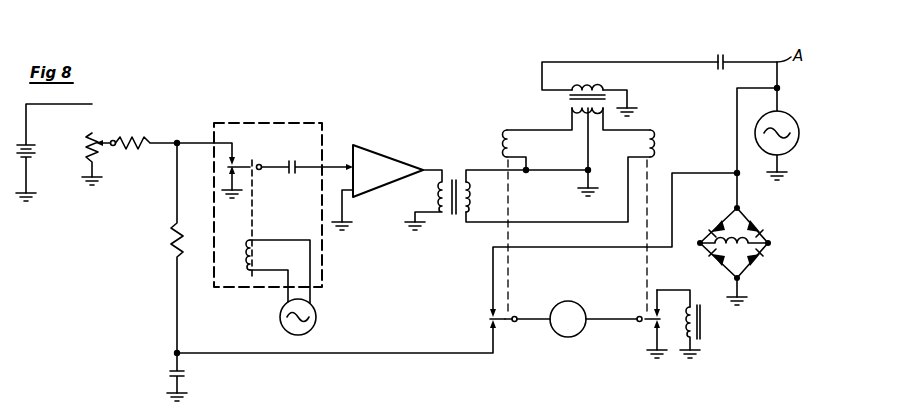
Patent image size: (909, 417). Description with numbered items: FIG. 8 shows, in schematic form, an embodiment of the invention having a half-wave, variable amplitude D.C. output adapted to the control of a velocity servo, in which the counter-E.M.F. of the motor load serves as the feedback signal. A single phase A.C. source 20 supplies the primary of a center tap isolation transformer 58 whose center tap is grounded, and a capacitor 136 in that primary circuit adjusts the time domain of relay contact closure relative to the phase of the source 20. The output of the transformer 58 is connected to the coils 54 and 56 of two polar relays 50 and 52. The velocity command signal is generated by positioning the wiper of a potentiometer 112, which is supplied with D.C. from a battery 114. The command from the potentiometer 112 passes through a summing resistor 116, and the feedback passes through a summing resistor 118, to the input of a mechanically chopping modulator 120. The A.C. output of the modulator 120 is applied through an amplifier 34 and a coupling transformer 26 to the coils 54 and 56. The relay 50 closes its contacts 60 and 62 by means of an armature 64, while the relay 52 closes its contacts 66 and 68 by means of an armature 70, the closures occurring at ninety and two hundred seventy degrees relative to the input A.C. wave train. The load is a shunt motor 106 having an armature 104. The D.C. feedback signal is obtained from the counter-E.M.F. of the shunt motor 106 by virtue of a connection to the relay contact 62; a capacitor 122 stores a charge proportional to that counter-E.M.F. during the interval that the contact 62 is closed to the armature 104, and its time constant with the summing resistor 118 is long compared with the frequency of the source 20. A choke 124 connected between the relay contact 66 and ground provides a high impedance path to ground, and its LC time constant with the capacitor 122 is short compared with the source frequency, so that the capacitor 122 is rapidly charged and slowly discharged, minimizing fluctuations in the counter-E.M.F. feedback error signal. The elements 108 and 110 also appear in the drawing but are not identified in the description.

The single phase A.C. source 20 is at (315, 325).
The coupling transformer 26 is at (455, 178).
The amplifier 34 is at (385, 160).
The polar relay 50 is at (522, 128).
The polar relay 52 is at (627, 128).
The coil 54 is at (509, 127).
The coil 56 is at (645, 144).
The center tap isolation transformer 58 is at (582, 86).
The relay contact 60 is at (496, 316).
The relay contact 62 is at (488, 331).
The armature 64 is at (507, 323).
The relay contact 66 is at (660, 297).
The relay contact 68 is at (650, 342).
The armature 70 is at (639, 331).
The armature 104 is at (582, 319).
The shunt motor 106 is at (590, 296).
The coil 108 is at (746, 247).
The diode bridge 110 is at (749, 250).
The potentiometer 112 is at (93, 134).
The battery 114 is at (38, 148).
The summing resistor 116 is at (132, 140).
The summing resistor 118 is at (172, 238).
The modulator 120 is at (246, 124).
The capacitor 122 is at (170, 372).
The choke 124 is at (700, 343).
The capacitor 136 is at (724, 58).